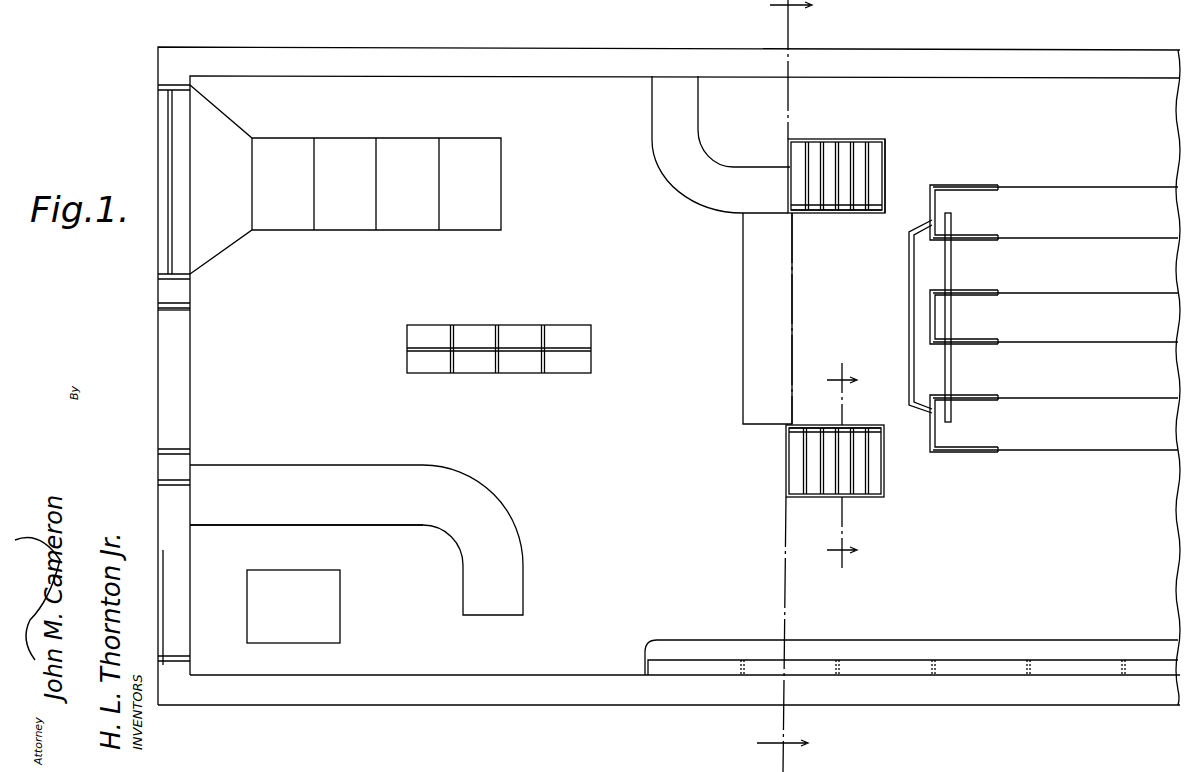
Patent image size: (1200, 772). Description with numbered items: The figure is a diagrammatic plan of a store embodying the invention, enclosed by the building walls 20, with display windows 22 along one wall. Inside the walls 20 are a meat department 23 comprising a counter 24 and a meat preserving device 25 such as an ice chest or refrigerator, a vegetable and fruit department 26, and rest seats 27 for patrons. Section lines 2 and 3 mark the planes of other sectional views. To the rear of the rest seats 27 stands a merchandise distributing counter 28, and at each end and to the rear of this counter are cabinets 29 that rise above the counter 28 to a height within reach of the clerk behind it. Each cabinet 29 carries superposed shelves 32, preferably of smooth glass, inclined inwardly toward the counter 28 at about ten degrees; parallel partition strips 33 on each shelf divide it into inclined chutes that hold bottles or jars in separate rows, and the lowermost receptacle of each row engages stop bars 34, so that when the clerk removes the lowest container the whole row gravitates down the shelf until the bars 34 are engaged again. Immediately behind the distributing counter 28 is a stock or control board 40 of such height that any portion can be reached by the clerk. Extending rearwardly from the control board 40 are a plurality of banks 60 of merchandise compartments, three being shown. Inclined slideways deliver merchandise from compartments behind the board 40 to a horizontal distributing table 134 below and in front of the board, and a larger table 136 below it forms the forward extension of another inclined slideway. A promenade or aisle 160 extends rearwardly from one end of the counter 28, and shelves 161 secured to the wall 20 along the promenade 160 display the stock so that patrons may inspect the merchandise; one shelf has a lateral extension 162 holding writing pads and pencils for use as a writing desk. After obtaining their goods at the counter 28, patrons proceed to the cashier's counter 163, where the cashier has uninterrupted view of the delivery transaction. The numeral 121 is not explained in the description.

The building walls 20 is at (278, 47).
The display windows 22 is at (165, 156).
The wall panel 121 is at (170, 348).
The vegetable and fruit department 26 is at (425, 205).
The rest seats 27 is at (487, 330).
The counter 24 is at (390, 468).
The meat department 23 is at (306, 545).
The meat preserving device 25 is at (330, 635).
The cashier's counter 163 is at (652, 132).
The merchandise distributing counter 28 is at (743, 371).
The shelves 32 is at (826, 150).
The partition strips 33 is at (868, 170).
The cabinets 29 is at (885, 139).
The stop bars 34 is at (840, 213).
The banks of merchandise compartments 60 is at (1043, 187).
The distributing table 134 is at (935, 205).
The stock or control board 40 is at (951, 258).
The larger table 136 is at (909, 279).
The lateral extension 162 is at (717, 648).
The shelves 161 is at (980, 660).
The promenade or aisle 160 is at (961, 572).
The section line 2- 2 is at (772, 386).
The section line 3- 3 is at (828, 466).